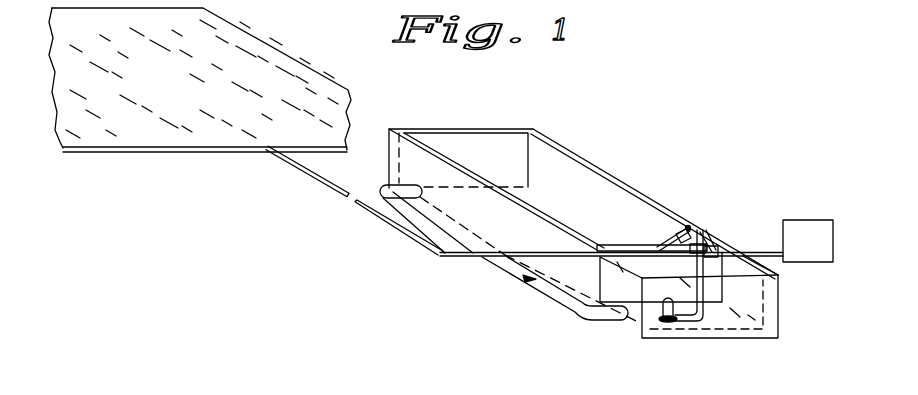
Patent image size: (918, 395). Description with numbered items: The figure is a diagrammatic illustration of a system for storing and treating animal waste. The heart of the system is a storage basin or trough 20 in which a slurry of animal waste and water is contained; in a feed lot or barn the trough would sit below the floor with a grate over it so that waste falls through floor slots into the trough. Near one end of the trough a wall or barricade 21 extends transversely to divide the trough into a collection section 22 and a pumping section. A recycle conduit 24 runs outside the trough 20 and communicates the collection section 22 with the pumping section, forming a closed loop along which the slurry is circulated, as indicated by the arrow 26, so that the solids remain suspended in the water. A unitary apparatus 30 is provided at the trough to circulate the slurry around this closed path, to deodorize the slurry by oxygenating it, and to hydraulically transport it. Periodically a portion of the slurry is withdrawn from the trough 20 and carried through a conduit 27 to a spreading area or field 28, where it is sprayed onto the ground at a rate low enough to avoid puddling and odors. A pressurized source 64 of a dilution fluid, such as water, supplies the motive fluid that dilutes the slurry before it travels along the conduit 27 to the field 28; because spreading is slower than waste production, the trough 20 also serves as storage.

The storage basin or trough 20 is at (585, 162).
The wall or barricade 21 is at (625, 246).
The collection section 22 is at (600, 193).
The recycle conduit 24 is at (565, 298).
The arrow 26 is at (517, 272).
The conduit 27 is at (387, 220).
The spreading area or field 28 is at (167, 130).
The unitary apparatus 30 is at (705, 237).
The pressurized source of dilution fluid 64 is at (807, 227).